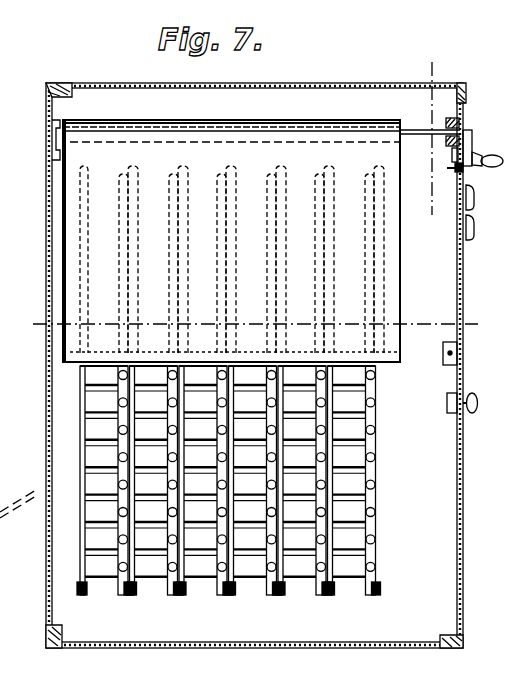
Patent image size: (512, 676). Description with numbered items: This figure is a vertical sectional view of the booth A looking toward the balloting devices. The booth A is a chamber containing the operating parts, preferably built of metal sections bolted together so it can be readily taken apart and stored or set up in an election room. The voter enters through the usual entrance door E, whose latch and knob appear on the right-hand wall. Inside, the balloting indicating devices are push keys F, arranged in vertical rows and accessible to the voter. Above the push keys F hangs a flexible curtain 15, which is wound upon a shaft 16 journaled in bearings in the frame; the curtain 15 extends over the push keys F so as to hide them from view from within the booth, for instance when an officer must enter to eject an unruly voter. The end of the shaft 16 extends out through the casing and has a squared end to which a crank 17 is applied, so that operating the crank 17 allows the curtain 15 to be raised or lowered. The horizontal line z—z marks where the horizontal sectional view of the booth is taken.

The flexible curtain 15 is at (231, 241).
The shaft 16 is at (414, 133).
The crank 17 is at (473, 158).
The booth A is at (256, 365).
The entrance door E is at (466, 396).
The push keys F is at (374, 490).
The section line z— z is at (253, 325).